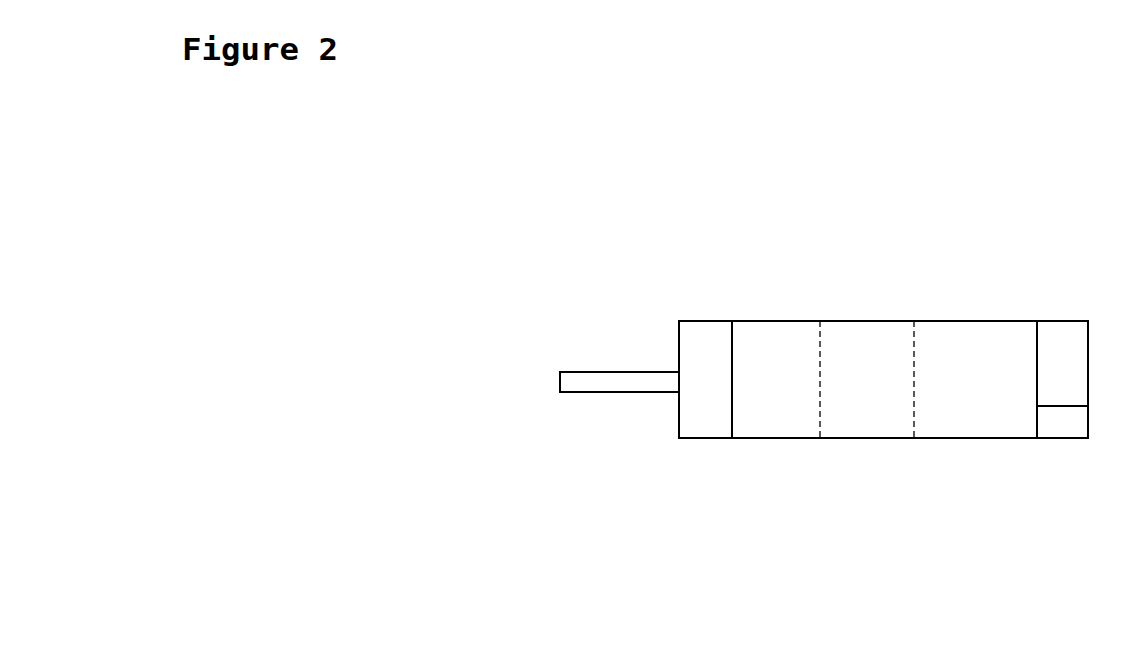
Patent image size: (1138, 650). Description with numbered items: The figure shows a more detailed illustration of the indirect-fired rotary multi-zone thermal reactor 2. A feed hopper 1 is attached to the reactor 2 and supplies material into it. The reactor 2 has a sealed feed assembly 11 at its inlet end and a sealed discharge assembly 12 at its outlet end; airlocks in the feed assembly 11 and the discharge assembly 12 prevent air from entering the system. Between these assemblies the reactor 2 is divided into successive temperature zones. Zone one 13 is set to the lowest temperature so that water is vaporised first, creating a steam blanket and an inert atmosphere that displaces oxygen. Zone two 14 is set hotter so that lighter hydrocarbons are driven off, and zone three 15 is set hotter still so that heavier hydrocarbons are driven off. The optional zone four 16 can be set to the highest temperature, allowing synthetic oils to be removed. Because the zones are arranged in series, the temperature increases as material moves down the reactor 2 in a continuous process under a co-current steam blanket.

The feed hopper 1 is at (590, 372).
The indirect-fired rotary thermal reactor 2 is at (820, 321).
The sealed feed assembly 11 is at (704, 358).
The sealed discharge assembly 12 is at (1060, 357).
The zone 1 13 is at (780, 425).
The zone 2 14 is at (866, 425).
The zone 3 15 is at (977, 425).
The zone 4 16 is at (977, 425).